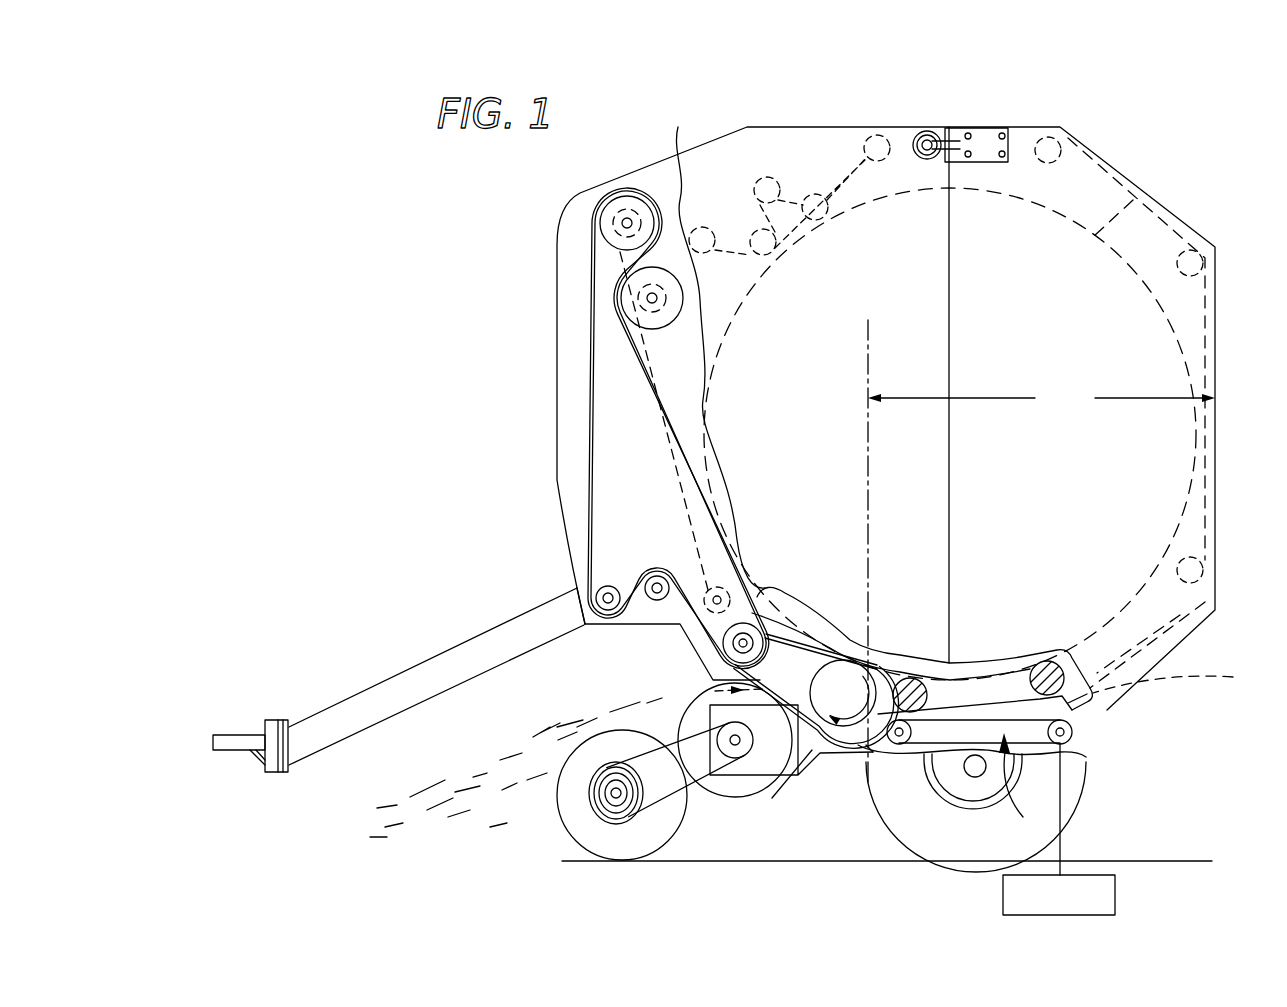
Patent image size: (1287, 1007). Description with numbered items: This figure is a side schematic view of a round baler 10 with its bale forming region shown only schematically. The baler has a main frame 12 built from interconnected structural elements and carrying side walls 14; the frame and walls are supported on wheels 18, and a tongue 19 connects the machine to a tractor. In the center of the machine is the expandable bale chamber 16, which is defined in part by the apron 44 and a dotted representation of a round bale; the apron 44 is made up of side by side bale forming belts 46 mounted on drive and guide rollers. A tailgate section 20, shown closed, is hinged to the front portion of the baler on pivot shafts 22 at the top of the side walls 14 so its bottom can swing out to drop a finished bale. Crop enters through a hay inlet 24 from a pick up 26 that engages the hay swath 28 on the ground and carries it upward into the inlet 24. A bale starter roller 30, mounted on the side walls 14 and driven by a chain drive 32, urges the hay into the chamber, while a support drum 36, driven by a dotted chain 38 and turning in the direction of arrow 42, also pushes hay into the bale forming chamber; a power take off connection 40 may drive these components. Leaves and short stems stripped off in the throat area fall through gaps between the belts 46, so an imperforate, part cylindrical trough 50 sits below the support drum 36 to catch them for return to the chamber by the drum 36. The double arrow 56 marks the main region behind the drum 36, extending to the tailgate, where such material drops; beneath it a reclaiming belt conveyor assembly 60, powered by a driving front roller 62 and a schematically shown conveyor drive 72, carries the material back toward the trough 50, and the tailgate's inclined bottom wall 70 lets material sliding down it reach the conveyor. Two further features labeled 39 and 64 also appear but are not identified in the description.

The baler 10 is at (548, 423).
The main frame 12 is at (501, 670).
The side walls 14 is at (705, 160).
The expandable bale chamber 16 is at (862, 275).
The wheels 18 is at (953, 847).
The tongue 19 is at (410, 675).
The tailgate section 20 is at (998, 128).
The pivot shafts 22 is at (927, 140).
The hay inlet 24 is at (787, 635).
The pick up 26 is at (657, 830).
The hay swath 28 is at (505, 790).
The bale starter roller 30 is at (727, 612).
The chain drive 32 is at (683, 438).
The support drum 36 is at (830, 712).
The chain 38 is at (821, 637).
The crop flow arrow 39 is at (688, 680).
The power take off connection 40 is at (577, 595).
The arrow 42 is at (877, 742).
The apron 44 is at (1127, 207).
The bale forming belts 46 is at (1003, 700).
The trough 50 is at (866, 740).
The double arrow 56 is at (1041, 399).
The reclaiming belt conveyor assembly 60 is at (1019, 794).
The front roller 62 is at (902, 740).
The link 64 is at (1075, 732).
The inclined bottom wall 70 is at (1181, 674).
The conveyor drive 72 is at (1115, 893).